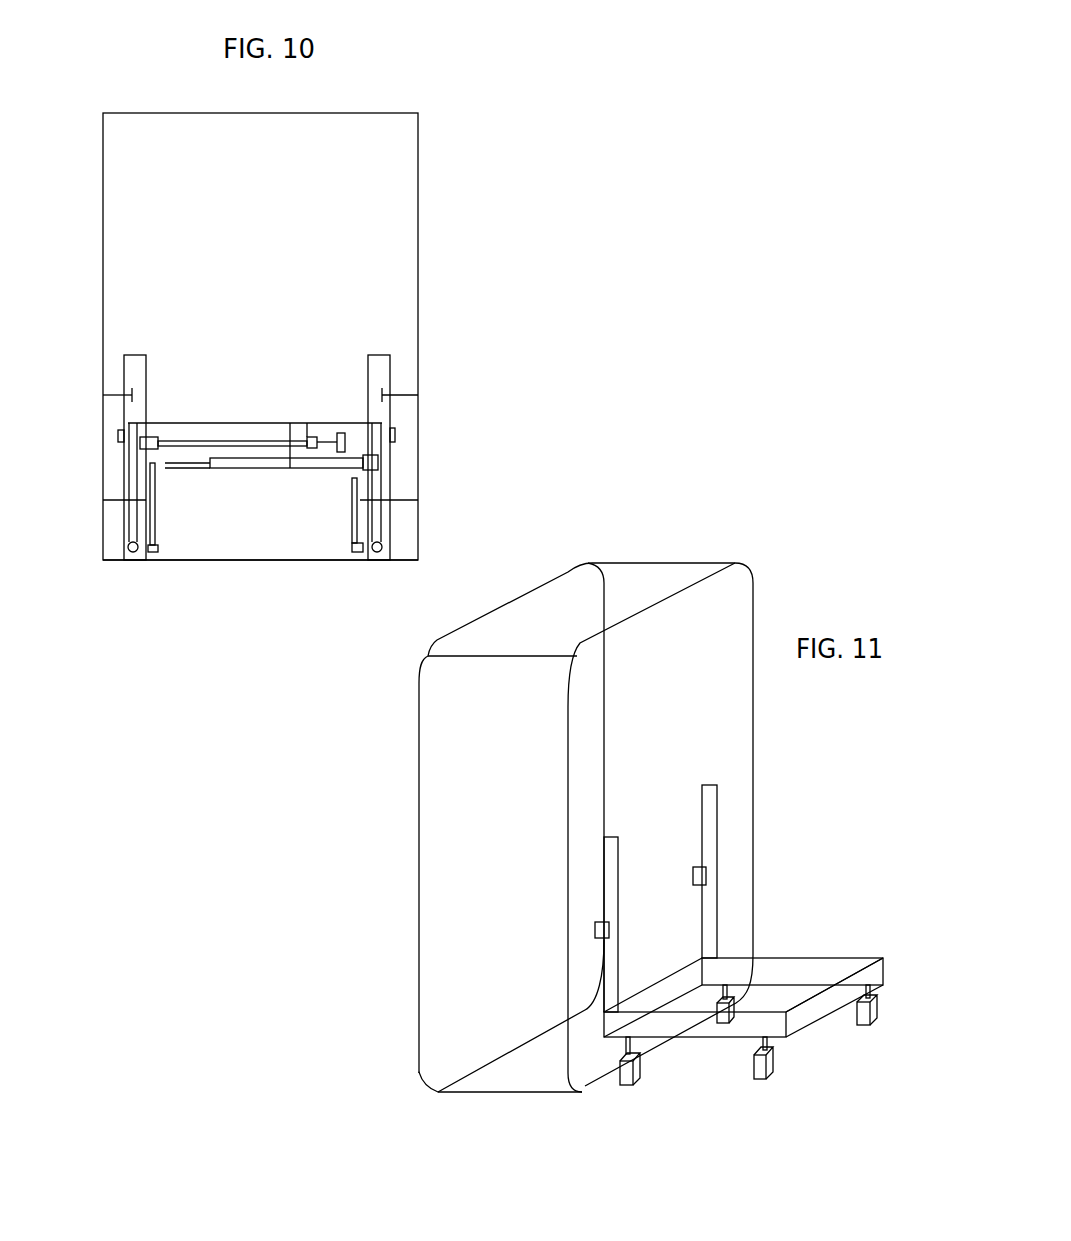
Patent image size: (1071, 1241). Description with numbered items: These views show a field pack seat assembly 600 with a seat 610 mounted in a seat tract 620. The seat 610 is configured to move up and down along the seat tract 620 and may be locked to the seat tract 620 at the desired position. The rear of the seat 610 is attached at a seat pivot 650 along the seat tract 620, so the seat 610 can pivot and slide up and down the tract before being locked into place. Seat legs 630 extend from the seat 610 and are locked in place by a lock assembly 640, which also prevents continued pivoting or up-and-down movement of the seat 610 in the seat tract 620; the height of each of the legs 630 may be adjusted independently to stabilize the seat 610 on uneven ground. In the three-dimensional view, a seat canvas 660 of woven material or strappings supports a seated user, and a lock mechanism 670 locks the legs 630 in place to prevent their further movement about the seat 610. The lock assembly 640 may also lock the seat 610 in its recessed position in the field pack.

In FIG. 10, the seat assembly 600 is at (442, 77).
In FIG. 11, the seat assembly 600 is at (740, 498).
In FIG. 10, the seat 610 is at (382, 423).
In FIG. 11, the seat 610 is at (815, 980).
In FIG. 10, the seat tract 620 is at (122, 370).
In FIG. 11, the seat tract 620 is at (608, 877).
In FIG. 10, the seat legs 630 is at (258, 462).
In FIG. 11, the seat legs 630 is at (773, 1073).
In FIG. 10, the lock assembly 640 is at (118, 438).
In FIG. 11, the lock assembly 640 is at (595, 932).
In FIG. 10, the seat pivot 650 is at (110, 552).
In FIG. 11, the seat pivot 650 is at (702, 980).
In FIG. 11, the seat canvas 660 is at (808, 995).
In FIG. 11, the lock mechanism 670 is at (767, 1042).